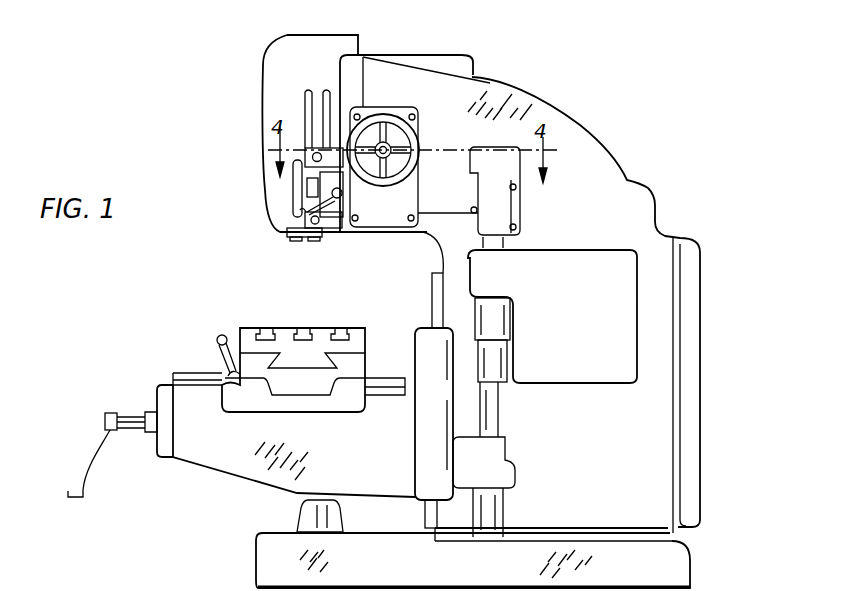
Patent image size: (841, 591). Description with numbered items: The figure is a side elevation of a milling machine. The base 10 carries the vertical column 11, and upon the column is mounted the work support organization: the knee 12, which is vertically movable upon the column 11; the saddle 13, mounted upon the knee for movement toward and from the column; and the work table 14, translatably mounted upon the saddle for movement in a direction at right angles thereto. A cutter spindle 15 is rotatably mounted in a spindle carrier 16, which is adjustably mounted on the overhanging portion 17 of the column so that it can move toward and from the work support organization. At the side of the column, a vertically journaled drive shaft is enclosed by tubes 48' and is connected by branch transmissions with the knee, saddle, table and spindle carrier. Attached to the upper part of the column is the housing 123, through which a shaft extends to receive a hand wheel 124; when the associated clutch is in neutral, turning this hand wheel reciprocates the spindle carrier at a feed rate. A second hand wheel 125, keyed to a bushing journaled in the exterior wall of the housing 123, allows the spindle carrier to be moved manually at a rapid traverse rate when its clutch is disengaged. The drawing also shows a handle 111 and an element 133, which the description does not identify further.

The base 10 is at (667, 557).
The vertical column 11 is at (657, 450).
The knee 12 is at (190, 453).
The saddle 13 is at (210, 377).
The work table 14 is at (249, 340).
The cutter spindle 15 is at (292, 242).
The spindle carrier 16 is at (273, 72).
The overhanging portion 17 is at (400, 88).
The tubes 48' is at (545, 387).
The handle lever 111 is at (220, 334).
The housing 123 is at (378, 203).
The hand wheel 124 is at (295, 188).
The hand wheel 125 is at (412, 140).
The link 133 is at (303, 217).